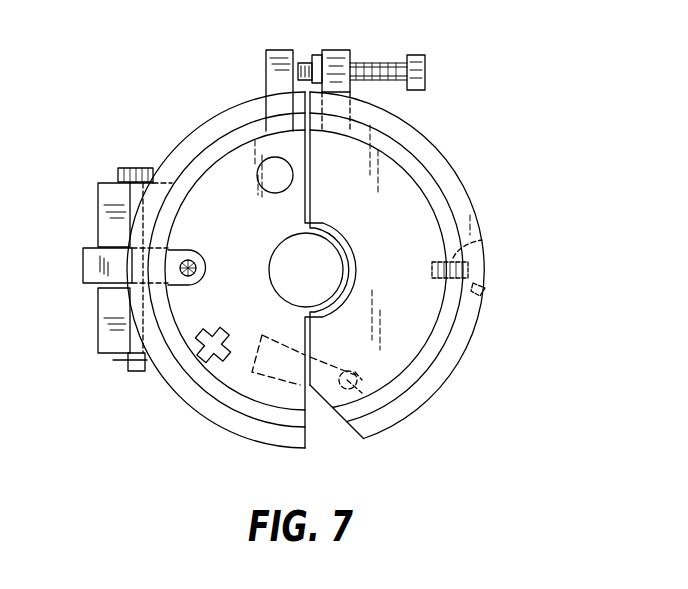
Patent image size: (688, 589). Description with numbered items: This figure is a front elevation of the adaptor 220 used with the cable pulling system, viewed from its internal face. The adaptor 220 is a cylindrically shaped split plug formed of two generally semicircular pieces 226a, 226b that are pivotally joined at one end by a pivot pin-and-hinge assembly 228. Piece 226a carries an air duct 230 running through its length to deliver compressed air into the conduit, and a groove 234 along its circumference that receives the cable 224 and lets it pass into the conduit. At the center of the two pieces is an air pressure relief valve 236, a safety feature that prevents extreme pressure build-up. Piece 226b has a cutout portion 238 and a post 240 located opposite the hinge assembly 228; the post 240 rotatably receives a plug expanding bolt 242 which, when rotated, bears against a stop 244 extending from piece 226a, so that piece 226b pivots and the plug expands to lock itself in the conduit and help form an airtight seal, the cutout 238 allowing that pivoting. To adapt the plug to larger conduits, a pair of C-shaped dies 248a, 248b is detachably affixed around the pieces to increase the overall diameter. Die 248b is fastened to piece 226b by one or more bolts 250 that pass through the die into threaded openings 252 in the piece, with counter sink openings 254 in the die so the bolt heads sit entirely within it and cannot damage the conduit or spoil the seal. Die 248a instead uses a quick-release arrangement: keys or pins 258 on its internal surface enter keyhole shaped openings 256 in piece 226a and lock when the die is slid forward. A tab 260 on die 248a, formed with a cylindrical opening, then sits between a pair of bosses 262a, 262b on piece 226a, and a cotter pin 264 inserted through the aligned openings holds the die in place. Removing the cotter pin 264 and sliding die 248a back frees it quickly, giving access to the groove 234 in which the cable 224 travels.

The adaptor 220 is at (518, 101).
The cable 224 is at (195, 275).
The split plug piece 226a is at (242, 390).
The split plug piece 226b is at (427, 335).
The pivot pin-and-hinge assembly 228 is at (383, 405).
The air duct 230 is at (273, 193).
The groove 234 is at (205, 267).
The air pressure relief valve 236 is at (333, 270).
The cutout portion 238 is at (323, 402).
The post 240 is at (336, 50).
The plug expanding bolt 242 is at (427, 71).
The stop 244 is at (266, 72).
The C-shaped die 248a is at (184, 143).
The C-shaped die 248b is at (437, 158).
The bolt 250 is at (470, 270).
The threaded opening 252 is at (487, 238).
The counter sink opening 254 is at (483, 298).
The keyhole shaped opening 256 is at (204, 364).
The key or pin 258 is at (212, 333).
The tab 260 is at (83, 266).
The boss 262a is at (98, 210).
The boss 262b is at (98, 325).
The cotter pin 264 is at (130, 168).